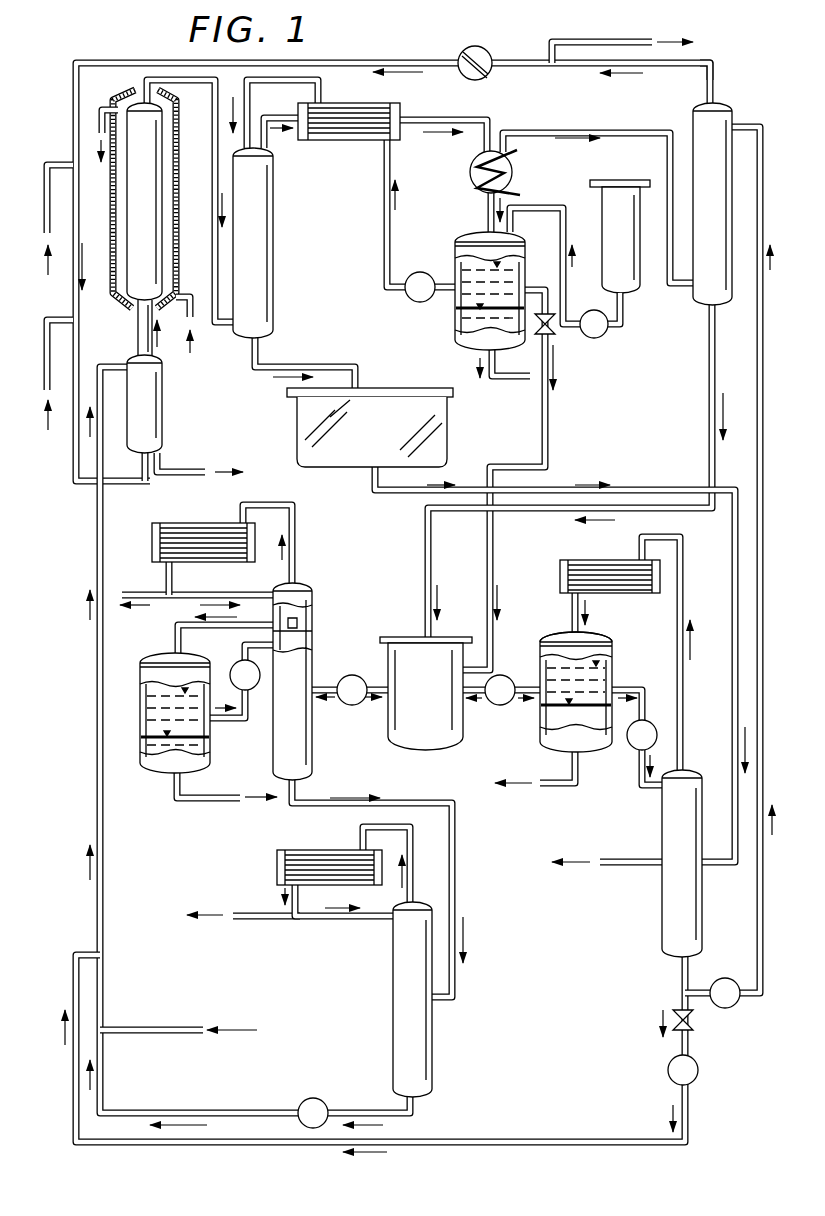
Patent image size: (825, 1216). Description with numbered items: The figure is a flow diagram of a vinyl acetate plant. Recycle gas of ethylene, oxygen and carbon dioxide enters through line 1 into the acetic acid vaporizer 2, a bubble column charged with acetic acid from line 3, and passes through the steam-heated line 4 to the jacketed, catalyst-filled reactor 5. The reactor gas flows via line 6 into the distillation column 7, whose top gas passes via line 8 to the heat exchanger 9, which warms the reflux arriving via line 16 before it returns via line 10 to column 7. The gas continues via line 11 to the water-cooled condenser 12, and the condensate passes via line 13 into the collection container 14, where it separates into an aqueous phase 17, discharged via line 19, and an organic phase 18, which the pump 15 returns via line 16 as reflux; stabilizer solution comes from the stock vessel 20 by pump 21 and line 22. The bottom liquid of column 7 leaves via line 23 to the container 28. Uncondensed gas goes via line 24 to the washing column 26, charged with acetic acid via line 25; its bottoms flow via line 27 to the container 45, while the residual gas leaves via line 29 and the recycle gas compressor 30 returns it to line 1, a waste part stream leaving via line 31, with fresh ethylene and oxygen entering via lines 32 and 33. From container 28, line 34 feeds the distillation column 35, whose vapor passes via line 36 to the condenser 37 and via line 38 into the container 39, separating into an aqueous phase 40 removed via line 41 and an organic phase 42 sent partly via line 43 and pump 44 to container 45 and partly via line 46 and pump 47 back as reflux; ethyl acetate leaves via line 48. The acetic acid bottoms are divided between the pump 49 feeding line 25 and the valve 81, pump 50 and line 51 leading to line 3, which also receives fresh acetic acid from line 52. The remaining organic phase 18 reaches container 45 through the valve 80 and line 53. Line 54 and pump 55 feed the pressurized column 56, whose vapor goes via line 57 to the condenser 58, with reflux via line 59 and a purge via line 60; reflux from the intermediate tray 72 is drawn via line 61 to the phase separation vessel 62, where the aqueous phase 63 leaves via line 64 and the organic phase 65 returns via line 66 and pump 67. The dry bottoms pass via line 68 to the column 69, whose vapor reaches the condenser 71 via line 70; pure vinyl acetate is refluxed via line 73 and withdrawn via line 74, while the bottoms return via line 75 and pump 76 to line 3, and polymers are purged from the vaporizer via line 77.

The line 1 is at (110, 61).
The acetic acid vaporizer 2 is at (162, 390).
The line 3 is at (99, 557).
The steam-heated line 4 is at (136, 336).
The reactor 5 is at (122, 214).
The line 6 is at (213, 148).
The distillation column 7 is at (272, 224).
The line 8 is at (274, 117).
The heat exchanger 9 is at (334, 142).
The line 10 is at (316, 80).
The line 11 is at (430, 117).
The water-cooled condenser 12 is at (470, 172).
The line 13 is at (487, 216).
The collection container 14 is at (456, 234).
The pump 15 is at (409, 304).
The line 16 is at (383, 240).
The aqueous phase 17 is at (458, 332).
The organic phase 18 is at (514, 280).
The line 19 is at (493, 382).
The stock vessel 20 is at (640, 298).
The pump 21 is at (597, 347).
The line 22 is at (564, 208).
The line 23 is at (305, 366).
The line 24 is at (576, 133).
The line 25 is at (758, 124).
The washing column 26 is at (692, 110).
The line 27 is at (710, 412).
The container 28 is at (354, 445).
The line 29 is at (712, 63).
The recycle gas compressor 30 is at (467, 46).
The line 31 is at (542, 42).
The line 32 is at (52, 163).
The line 33 is at (52, 319).
The line 34 is at (378, 492).
The distillation column 35 is at (662, 925).
The line 36 is at (682, 575).
The condenser 37 is at (560, 584).
The line 38 is at (572, 618).
The container 39 is at (600, 635).
The aqueous phase 40 is at (540, 746).
The line 41 is at (566, 792).
The organic phase 42 is at (610, 670).
The line 43 is at (516, 686).
The pump 44 is at (502, 707).
The container 45 is at (409, 705).
The line 46 is at (642, 705).
The pump 47 is at (631, 754).
The line 48 is at (634, 868).
The pump 49 is at (733, 1010).
The pump 50 is at (670, 1074).
The line 51 is at (495, 1139).
The line 52 is at (162, 1027).
The line 53 is at (548, 427).
The line 54 is at (366, 680).
The pump 55 is at (351, 707).
The column 56 is at (316, 596).
The line 57 is at (296, 542).
The condenser 58 is at (210, 523).
The line 59 is at (236, 593).
The line 60 is at (136, 593).
The line 61 is at (176, 630).
The phase separation vessel 62 is at (152, 765).
The aqueous phase 63 is at (140, 754).
The line 64 is at (202, 802).
The organic phase 65 is at (140, 704).
The line 66 is at (224, 744).
The pump 67 is at (254, 705).
The line 68 is at (456, 860).
The column 69 is at (393, 973).
The line 70 is at (412, 834).
The condenser 71 is at (277, 863).
The intermediate tray 72 is at (301, 625).
The line 73 is at (351, 920).
The line 74 is at (256, 920).
The line 75 is at (346, 1111).
The pump 76 is at (310, 1098).
The line 77 is at (184, 470).
The valve 80 is at (556, 336).
The valve 81 is at (697, 1024).